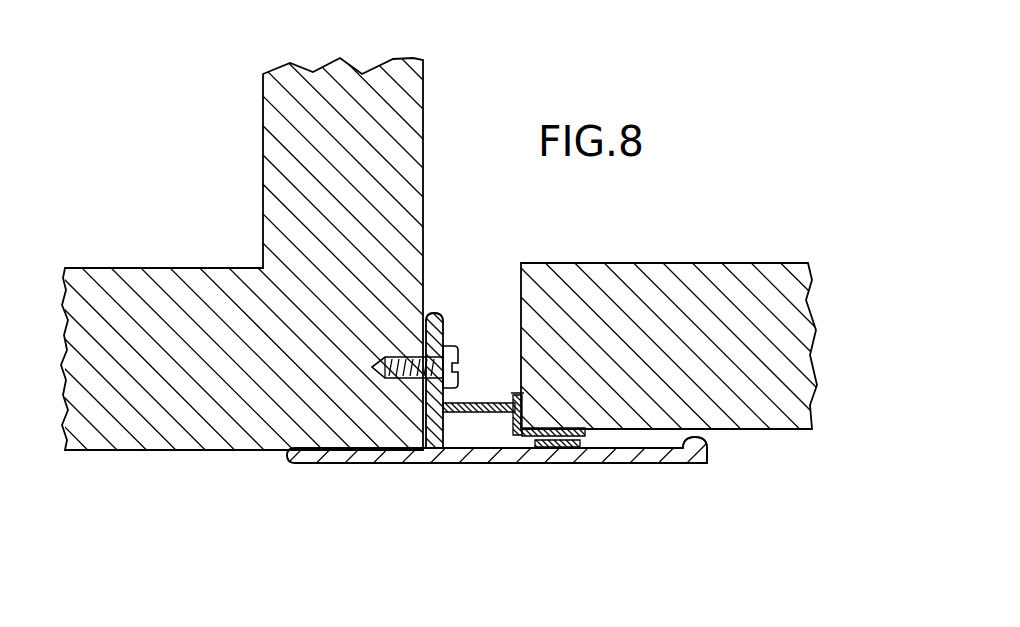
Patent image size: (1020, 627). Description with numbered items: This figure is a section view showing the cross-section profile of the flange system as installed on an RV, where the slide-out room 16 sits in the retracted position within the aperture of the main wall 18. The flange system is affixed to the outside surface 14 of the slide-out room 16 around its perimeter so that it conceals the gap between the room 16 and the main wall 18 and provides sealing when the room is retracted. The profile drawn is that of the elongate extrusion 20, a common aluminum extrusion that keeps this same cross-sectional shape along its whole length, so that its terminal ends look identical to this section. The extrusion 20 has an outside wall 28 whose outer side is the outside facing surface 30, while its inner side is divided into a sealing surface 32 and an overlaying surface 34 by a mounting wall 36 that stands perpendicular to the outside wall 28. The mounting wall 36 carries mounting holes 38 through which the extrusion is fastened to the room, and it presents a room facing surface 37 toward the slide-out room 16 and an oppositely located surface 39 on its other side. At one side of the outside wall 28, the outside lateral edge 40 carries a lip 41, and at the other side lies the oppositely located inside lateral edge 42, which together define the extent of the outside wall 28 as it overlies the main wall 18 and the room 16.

The outside surface 14 is at (135, 452).
The slide-out room 16 is at (173, 462).
The main wall 18 is at (700, 290).
The elongate extrusion 20 is at (621, 480).
The outside wall 28 is at (556, 466).
The outside facing surface 30 is at (461, 466).
The sealing surface 32 is at (498, 466).
The overlaying surface 34 is at (368, 446).
The mounting wall 36 is at (455, 401).
The room facing surface 37 is at (422, 328).
The mounting holes 38 is at (444, 346).
The oppositely located surface 39 is at (443, 320).
The outside lateral edge 40 is at (708, 446).
The lip 41 is at (695, 466).
The inside lateral edge 42 is at (289, 465).